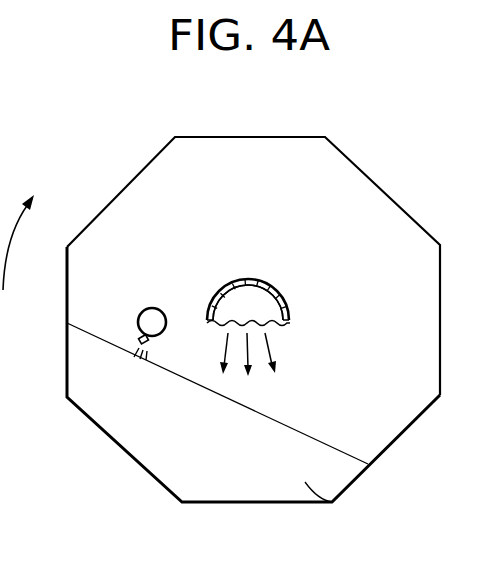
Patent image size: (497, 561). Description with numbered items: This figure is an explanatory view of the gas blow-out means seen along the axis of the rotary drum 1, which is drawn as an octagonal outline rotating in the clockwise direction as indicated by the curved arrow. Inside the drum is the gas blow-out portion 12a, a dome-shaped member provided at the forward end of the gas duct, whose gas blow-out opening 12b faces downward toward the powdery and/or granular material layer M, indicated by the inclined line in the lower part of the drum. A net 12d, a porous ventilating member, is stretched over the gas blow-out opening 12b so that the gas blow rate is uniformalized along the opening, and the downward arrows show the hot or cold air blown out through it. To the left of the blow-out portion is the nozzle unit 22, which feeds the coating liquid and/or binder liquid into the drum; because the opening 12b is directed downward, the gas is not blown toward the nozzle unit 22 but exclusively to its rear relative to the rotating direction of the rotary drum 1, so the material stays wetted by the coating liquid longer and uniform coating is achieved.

The rotary drum 1 is at (408, 201).
The gas blow-out portion 12a is at (250, 278).
The gas blow-out opening 12b is at (272, 310).
The net 12d is at (279, 322).
The nozzle unit 22 is at (147, 309).
The powdery and/or granular material layer M is at (333, 504).